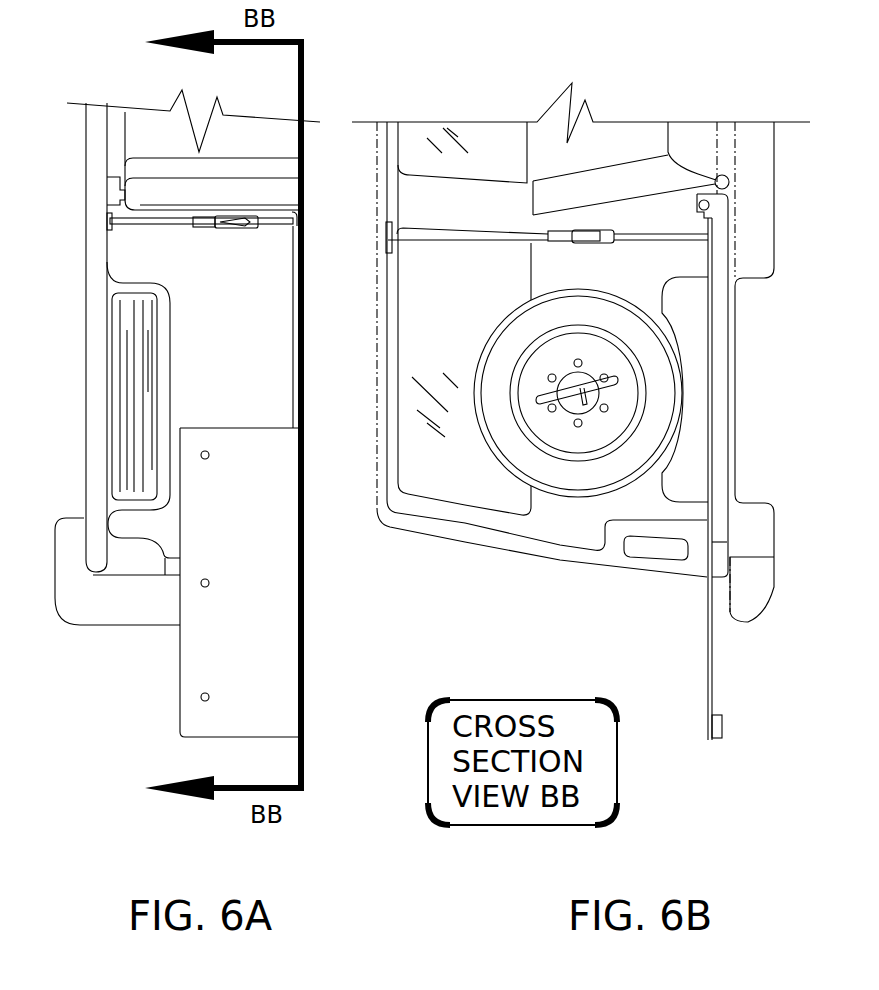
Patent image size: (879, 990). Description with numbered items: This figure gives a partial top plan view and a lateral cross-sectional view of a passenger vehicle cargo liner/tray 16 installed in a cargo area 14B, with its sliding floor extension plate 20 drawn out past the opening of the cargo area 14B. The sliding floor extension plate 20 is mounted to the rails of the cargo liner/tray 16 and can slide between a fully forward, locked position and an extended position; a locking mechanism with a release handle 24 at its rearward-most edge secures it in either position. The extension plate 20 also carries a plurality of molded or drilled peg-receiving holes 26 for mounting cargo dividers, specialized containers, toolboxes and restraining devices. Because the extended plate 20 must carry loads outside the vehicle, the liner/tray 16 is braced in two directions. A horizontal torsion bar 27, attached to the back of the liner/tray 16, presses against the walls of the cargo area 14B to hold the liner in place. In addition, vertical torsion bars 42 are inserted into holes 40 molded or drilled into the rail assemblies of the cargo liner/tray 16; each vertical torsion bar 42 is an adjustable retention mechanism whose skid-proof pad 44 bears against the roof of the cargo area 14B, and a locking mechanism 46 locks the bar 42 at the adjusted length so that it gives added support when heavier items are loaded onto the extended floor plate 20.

In FIG. 6A, the cargo area 14B is at (93, 577).
In FIG. 6B, the cargo area 14B is at (550, 563).
In FIG. 6A, the cargo liner/tray 16 is at (247, 290).
In FIG. 6B, the cargo liner/tray 16 is at (720, 527).
In FIG. 6A, the sliding floor extension plate 20 is at (265, 631).
In FIG. 6B, the sliding floor extension plate 20 is at (708, 668).
In FIG. 6B, the release handle 24 is at (724, 728).
In FIG. 6A, the peg-receiving holes 26 is at (200, 697).
In FIG. 6A, the horizontal torsion bar 27 is at (133, 221).
In FIG. 6B, the horizontal torsion bar 27 is at (716, 176).
In FIG. 6B, the mounting holes 40 is at (720, 235).
In FIG. 6B, the vertical torsion bar 42 is at (427, 240).
In FIG. 6B, the skid-proof pad 44 is at (388, 240).
In FIG. 6A, the locking mechanism 46 is at (207, 220).
In FIG. 6B, the locking mechanism 46 is at (578, 236).